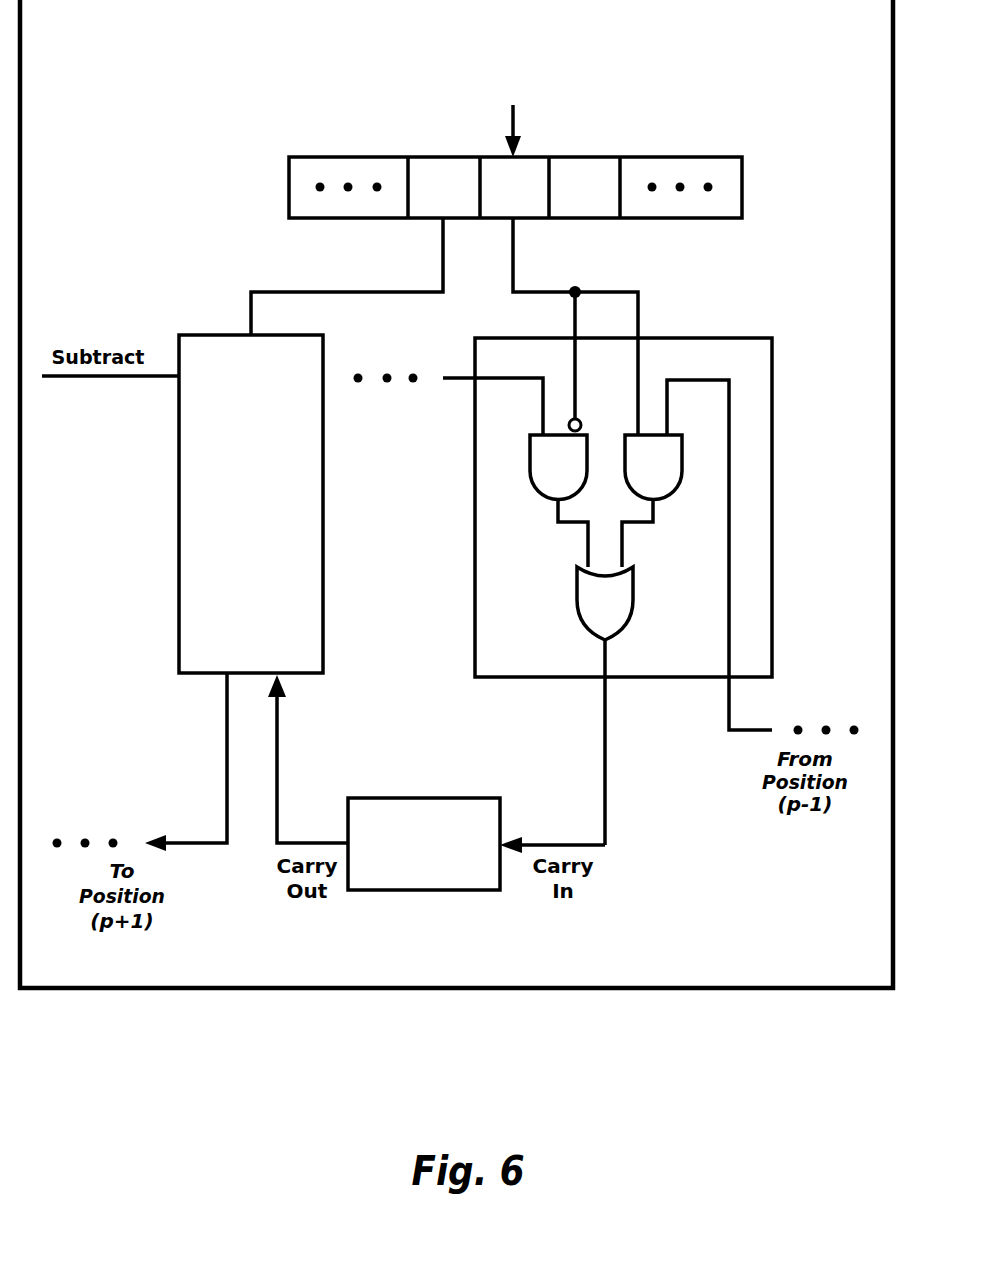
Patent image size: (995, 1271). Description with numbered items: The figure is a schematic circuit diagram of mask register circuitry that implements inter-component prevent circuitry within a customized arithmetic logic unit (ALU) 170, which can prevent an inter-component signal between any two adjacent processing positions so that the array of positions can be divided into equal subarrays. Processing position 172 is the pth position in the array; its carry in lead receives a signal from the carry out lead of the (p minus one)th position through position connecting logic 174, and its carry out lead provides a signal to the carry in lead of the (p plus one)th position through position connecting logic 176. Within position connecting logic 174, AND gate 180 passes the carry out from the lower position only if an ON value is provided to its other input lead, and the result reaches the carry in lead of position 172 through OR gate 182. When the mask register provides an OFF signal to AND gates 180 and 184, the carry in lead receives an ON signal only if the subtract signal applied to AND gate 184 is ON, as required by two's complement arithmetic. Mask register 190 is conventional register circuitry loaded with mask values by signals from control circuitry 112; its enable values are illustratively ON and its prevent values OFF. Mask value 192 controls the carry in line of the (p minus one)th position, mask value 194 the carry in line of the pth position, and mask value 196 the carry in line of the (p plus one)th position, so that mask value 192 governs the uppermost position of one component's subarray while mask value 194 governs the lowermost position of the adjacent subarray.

The arithmetic logic unit 170 is at (499, 1000).
The processing position 172 is at (425, 890).
The position connecting logic 174 is at (623, 591).
The position connecting logic 176 is at (179, 500).
The AND gate 180 is at (682, 457).
The OR gate 182 is at (633, 595).
The AND gate 184 is at (530, 457).
The mask register 190 is at (742, 192).
The mask value 192 is at (585, 157).
The mask value 194 is at (533, 157).
The mask value 196 is at (443, 157).
The control circuitry 112 is at (513, 79).